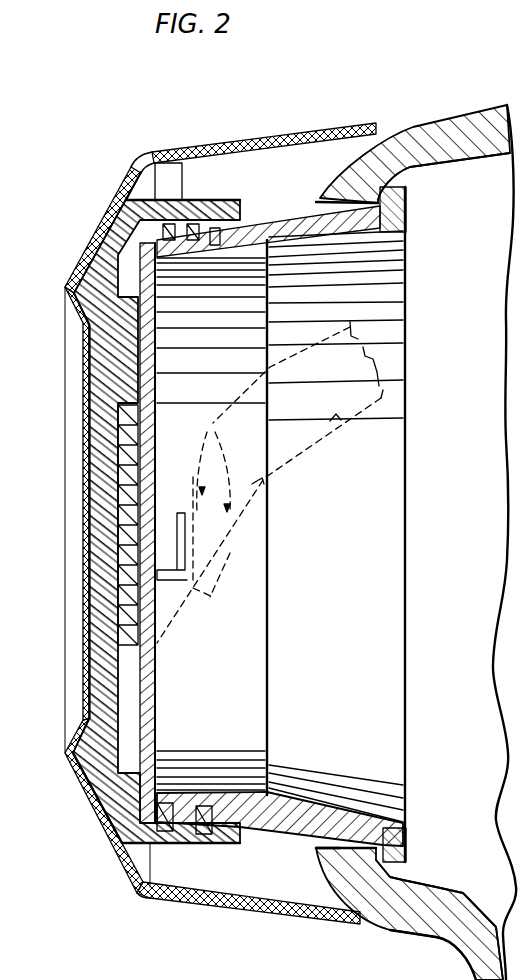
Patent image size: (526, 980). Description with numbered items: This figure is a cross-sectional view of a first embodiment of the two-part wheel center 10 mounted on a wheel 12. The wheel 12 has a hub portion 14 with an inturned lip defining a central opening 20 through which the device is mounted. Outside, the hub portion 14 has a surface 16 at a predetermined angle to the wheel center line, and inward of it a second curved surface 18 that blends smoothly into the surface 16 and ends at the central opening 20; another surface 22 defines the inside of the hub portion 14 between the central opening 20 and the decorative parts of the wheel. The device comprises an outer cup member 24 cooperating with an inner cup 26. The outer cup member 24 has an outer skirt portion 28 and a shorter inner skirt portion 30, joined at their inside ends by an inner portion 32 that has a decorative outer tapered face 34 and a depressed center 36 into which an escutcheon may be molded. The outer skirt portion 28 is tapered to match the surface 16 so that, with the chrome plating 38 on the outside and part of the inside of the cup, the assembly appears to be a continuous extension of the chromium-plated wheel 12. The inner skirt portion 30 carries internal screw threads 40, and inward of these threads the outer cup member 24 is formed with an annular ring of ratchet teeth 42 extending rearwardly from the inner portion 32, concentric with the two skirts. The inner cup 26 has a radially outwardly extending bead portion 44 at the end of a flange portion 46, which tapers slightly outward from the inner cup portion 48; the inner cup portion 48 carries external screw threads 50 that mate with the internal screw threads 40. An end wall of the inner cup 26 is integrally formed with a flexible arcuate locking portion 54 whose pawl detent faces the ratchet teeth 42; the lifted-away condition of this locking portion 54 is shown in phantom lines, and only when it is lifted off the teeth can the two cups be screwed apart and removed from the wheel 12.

The two-part wheel center 10 is at (75, 216).
The wheel 12 is at (454, 103).
The hub portion 14 is at (356, 178).
The surface 16 is at (388, 931).
The second curved surface 18 is at (323, 873).
The central opening 20 is at (316, 204).
The surface 22 is at (413, 173).
The outer cup member 24 is at (120, 885).
The inner cup 26 is at (414, 707).
The outer skirt portion 28 is at (217, 144).
The inner skirt portion 30 is at (160, 150).
The inner portion 32 is at (84, 358).
The outer tapered face 34 is at (84, 827).
The depressed center 36 is at (84, 537).
The plating 38 is at (84, 788).
The internal screw threads 40 is at (182, 216).
The ratchet teeth 42 is at (118, 520).
The bead portion 44 is at (392, 196).
The flange portion 46 is at (378, 230).
The inner cup portion 48 is at (274, 777).
The external screw threads 50 is at (172, 818).
The flexible arcuate locking portion 54 is at (270, 482).